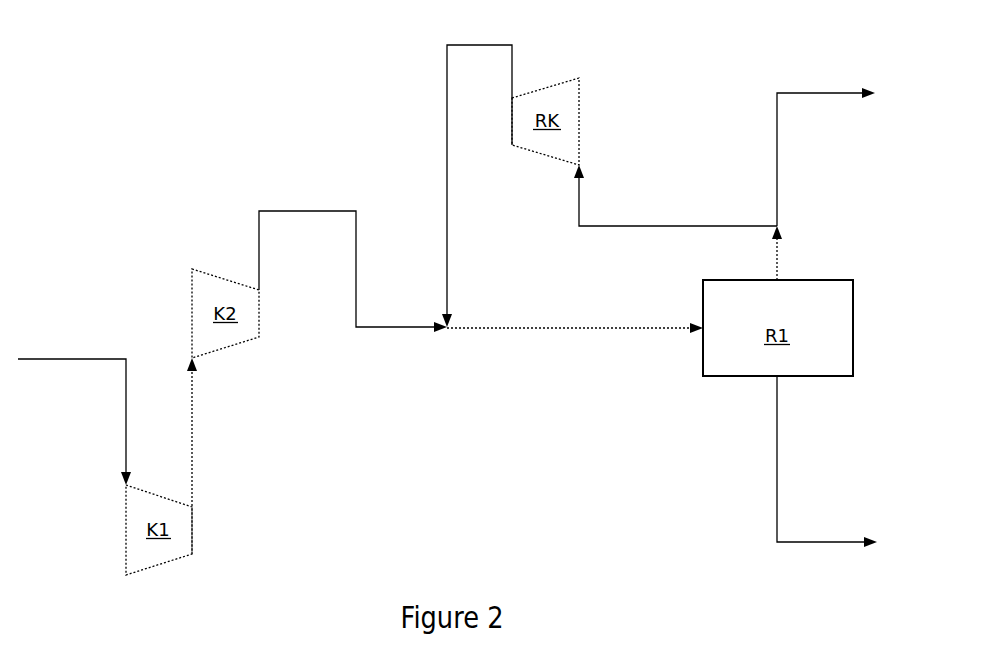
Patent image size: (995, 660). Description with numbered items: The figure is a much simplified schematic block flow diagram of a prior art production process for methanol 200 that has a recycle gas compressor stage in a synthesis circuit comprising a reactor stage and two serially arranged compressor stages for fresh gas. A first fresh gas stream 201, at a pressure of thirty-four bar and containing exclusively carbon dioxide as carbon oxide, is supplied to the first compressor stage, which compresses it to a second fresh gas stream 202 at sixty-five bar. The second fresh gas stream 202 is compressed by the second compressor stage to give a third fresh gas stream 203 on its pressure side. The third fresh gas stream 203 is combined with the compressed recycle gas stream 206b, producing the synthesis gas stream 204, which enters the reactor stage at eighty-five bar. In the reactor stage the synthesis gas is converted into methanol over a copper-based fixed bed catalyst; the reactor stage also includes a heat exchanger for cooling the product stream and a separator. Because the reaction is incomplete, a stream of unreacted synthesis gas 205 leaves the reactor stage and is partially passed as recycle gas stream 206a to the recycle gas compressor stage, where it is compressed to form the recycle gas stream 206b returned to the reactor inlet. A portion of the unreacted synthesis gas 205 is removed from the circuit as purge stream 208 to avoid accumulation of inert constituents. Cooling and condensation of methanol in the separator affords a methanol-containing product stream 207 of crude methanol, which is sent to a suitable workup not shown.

The production process for methanol 200 is at (112, 77).
The first fresh gas stream 201 is at (77, 422).
The second fresh gas stream 202 is at (192, 456).
The third fresh gas stream 203 is at (353, 271).
The synthesis gas stream 204 is at (575, 328).
The stream of unreacted synthesis gas 205 is at (777, 253).
The recycle gas stream 206a is at (675, 199).
The recycle gas stream 206b is at (477, 182).
The methanol-containing product stream 207 is at (821, 461).
The purge stream 208 is at (820, 157).